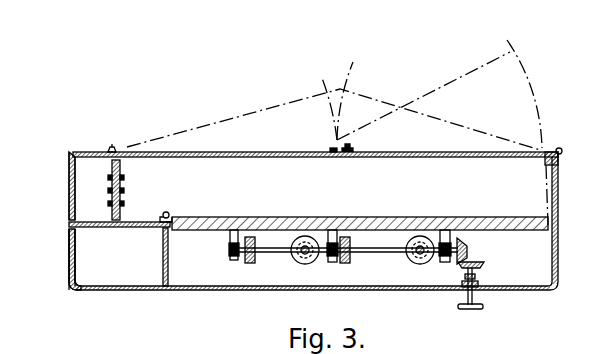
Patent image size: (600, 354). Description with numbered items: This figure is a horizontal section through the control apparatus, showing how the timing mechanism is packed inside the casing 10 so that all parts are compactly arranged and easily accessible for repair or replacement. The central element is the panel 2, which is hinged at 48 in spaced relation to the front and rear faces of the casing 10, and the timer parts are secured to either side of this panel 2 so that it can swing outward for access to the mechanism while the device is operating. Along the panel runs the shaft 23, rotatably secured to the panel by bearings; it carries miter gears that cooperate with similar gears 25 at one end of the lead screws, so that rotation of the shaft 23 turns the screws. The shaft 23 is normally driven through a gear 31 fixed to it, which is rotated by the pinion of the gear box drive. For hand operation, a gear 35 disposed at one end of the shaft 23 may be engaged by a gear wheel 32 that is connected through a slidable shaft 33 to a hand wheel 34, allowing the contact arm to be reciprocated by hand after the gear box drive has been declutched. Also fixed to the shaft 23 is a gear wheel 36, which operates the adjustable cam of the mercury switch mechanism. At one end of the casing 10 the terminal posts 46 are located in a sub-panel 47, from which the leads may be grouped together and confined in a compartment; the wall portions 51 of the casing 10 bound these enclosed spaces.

The panel 2 is at (389, 217).
The casing 10 is at (558, 200).
The shaft 23 is at (392, 253).
The gears 25 is at (299, 265).
The gear 31 is at (340, 264).
The gear wheel 32 is at (482, 265).
The slidable shaft 33 is at (474, 300).
The hand wheel 34 is at (477, 310).
The gear 35 is at (468, 247).
The gear wheel 36 is at (238, 262).
The terminal posts 46 is at (125, 191).
The sub-panel 47 is at (122, 174).
The hinge 48 is at (165, 212).
The side wall 51 is at (70, 194).